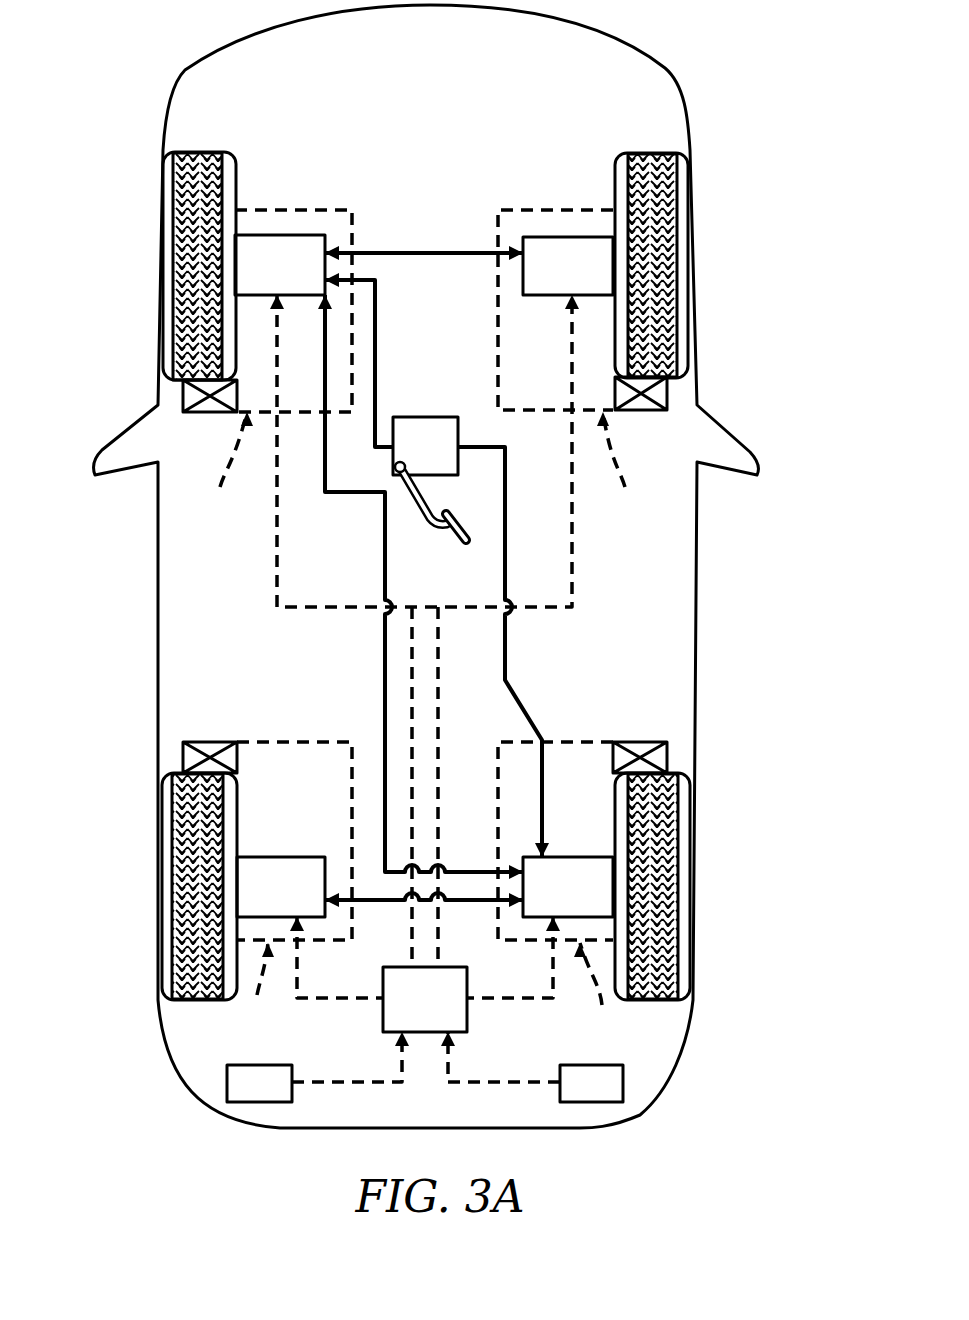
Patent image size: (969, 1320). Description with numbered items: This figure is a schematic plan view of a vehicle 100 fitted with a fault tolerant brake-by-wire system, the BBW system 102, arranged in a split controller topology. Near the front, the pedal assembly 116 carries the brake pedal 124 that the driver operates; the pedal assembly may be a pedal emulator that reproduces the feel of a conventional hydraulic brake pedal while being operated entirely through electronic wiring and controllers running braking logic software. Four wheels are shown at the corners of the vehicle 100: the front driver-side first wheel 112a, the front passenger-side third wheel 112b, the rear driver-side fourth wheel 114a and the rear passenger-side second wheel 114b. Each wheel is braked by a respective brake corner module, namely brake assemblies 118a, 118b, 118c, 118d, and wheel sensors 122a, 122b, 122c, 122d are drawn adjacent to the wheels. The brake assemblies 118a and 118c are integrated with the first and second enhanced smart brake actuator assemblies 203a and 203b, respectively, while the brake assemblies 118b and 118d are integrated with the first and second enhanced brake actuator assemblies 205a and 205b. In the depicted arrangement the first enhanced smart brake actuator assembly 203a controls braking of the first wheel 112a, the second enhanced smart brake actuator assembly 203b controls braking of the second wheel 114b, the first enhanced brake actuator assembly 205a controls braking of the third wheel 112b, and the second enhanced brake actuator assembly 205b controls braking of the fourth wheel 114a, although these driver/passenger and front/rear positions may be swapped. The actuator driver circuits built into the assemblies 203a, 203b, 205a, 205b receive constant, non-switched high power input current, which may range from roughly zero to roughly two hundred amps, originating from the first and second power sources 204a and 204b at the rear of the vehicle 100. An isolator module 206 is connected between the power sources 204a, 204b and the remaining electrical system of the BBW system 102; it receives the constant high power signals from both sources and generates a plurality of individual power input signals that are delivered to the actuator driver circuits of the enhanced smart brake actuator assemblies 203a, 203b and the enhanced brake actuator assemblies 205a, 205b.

The vehicle 100 is at (717, 583).
The BBW system 102 is at (413, 158).
The first wheel 112a is at (160, 243).
The third wheel 112b is at (690, 250).
The fourth wheel 114a is at (160, 925).
The second wheel 114b is at (695, 925).
The pedal assembly 116 is at (432, 417).
The brake assembly 118a is at (220, 462).
The brake assembly 118b is at (627, 461).
The brake assembly 118c is at (605, 988).
The brake assembly 118d is at (258, 984).
The wheel sensor 122a is at (190, 412).
The wheel sensor 122b is at (650, 410).
The brake actuator 122c is at (647, 742).
The brake actuator 122d is at (190, 742).
The brake pedal 124 is at (417, 512).
The first enhanced smart brake actuator assembly 203a is at (275, 250).
The second enhanced smart brake actuator assembly 203b is at (538, 857).
The first enhanced brake actuator assembly 205a is at (575, 252).
The second enhanced brake actuator assembly 205b is at (320, 857).
The first power source 204a is at (227, 1088).
The second power source 204b is at (623, 1088).
The isolator module 206 is at (383, 1015).